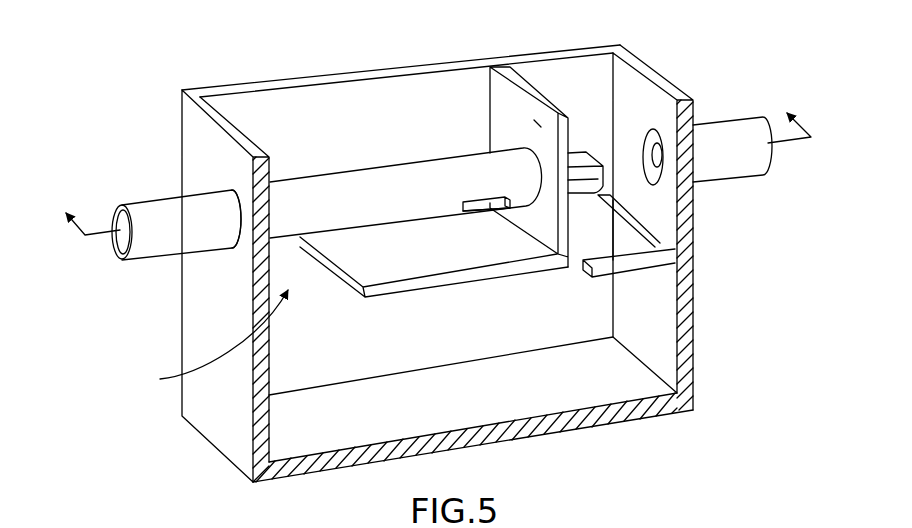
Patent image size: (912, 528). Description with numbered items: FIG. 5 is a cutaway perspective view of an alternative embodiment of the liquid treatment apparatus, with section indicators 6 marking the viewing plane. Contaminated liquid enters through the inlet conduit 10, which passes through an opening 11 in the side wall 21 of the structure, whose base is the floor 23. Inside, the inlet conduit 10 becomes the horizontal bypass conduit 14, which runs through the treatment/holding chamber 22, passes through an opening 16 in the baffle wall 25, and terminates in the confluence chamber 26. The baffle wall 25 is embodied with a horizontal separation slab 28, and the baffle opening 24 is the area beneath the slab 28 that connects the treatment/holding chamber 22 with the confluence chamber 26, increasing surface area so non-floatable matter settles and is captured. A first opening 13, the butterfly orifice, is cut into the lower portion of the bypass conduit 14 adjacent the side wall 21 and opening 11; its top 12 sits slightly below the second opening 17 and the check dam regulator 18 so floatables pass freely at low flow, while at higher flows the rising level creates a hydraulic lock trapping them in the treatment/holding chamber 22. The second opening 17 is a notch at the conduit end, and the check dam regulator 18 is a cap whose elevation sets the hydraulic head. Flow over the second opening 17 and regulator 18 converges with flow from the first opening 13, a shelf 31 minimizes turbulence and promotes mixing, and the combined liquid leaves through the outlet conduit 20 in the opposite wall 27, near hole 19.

The section line 6 is at (430, 161).
The inlet conduit 10 is at (160, 210).
The opening 11 is at (232, 198).
The top of the first opening 12 is at (486, 200).
The first opening 13 is at (490, 212).
The bypass conduit 14 is at (412, 185).
The opening 16 is at (514, 150).
The second opening 17 is at (581, 153).
The check dam regulator 18 is at (582, 130).
The outlet hole 19 is at (658, 140).
The outlet conduit 20 is at (715, 182).
The side wall 21 is at (200, 324).
The treatment/holding chamber 22 is at (435, 332).
The floor 23 is at (318, 421).
The baffle opening 24 is at (207, 342).
The baffle wall 25 is at (535, 120).
The confluence chamber 26 is at (612, 238).
The opposite wall 27 is at (660, 302).
The horizontal separation slab 28 is at (385, 255).
The shelf 31 is at (633, 268).